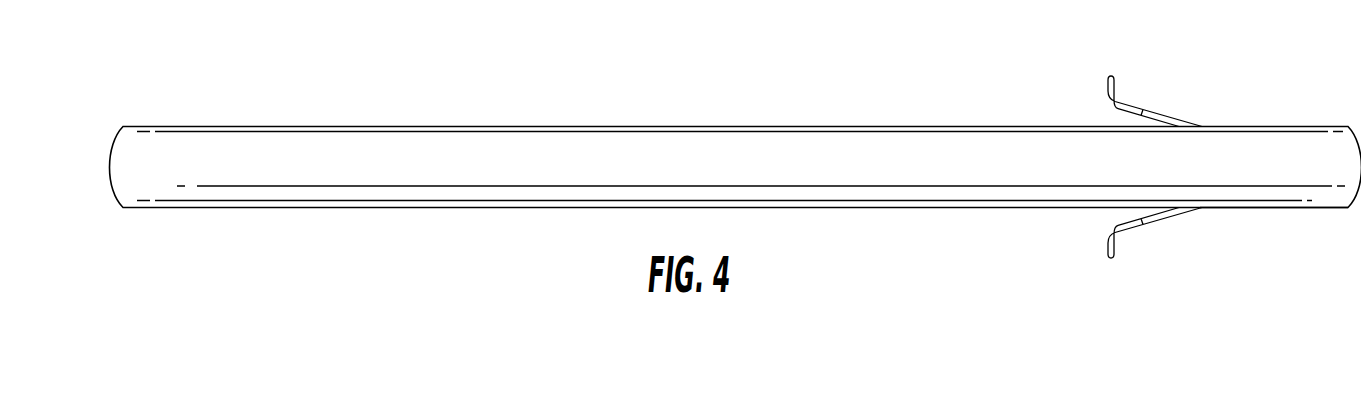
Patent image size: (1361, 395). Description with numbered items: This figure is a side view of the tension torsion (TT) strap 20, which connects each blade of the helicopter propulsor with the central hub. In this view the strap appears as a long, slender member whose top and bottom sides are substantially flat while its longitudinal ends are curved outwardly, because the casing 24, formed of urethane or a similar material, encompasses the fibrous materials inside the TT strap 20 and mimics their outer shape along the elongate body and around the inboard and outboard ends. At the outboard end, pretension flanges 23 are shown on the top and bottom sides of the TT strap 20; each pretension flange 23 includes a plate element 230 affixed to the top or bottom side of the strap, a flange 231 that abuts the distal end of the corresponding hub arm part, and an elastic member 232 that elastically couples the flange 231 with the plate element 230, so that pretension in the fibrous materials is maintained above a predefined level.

The tension torsion strap 20 is at (157, 118).
The casing 24 is at (607, 168).
The pretension flange 23 is at (1129, 175).
The plate element 230 is at (1293, 212).
The flange 231 is at (1107, 90).
The elastic member 232 is at (1140, 228).